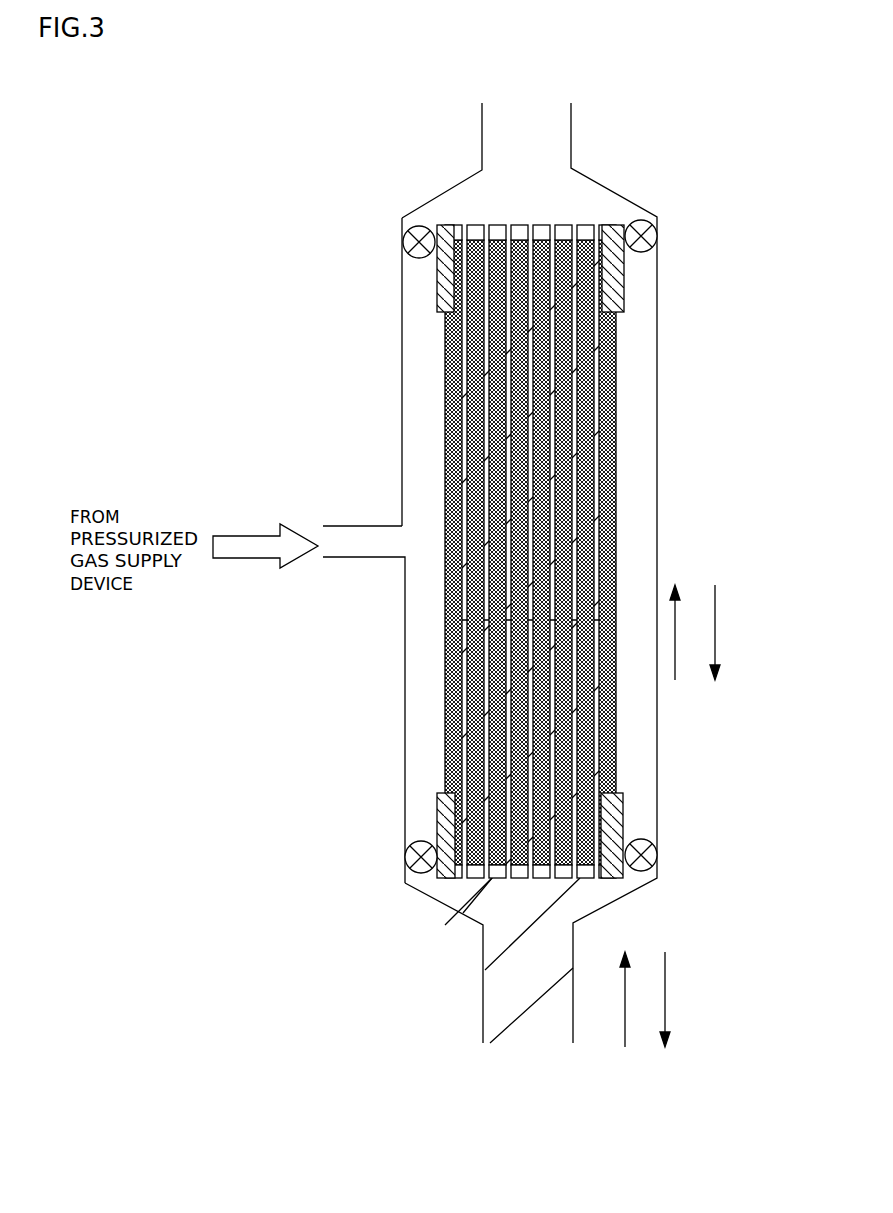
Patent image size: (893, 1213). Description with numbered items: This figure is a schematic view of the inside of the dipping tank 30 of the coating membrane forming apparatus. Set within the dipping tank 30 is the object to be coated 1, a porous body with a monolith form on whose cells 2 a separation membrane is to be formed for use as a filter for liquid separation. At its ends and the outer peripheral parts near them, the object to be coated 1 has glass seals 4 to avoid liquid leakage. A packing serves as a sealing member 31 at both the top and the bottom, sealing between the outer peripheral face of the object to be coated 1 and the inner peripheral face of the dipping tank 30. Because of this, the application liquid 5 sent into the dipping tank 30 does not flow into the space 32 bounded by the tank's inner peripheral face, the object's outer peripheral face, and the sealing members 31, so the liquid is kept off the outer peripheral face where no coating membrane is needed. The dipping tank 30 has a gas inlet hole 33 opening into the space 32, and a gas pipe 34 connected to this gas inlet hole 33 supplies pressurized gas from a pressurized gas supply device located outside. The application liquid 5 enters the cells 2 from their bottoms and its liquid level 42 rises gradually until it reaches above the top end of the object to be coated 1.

The object to be coated 1 is at (448, 343).
The cells 2 is at (598, 492).
The glass seals 4 is at (625, 283).
The application liquid 5 is at (600, 735).
The dipping tank 30 is at (658, 338).
The sealing member 31 is at (410, 243).
The space 32 is at (418, 438).
The gas inlet hole 33 is at (402, 540).
The gas pipe 34 is at (373, 558).
The liquid level 42 is at (573, 620).